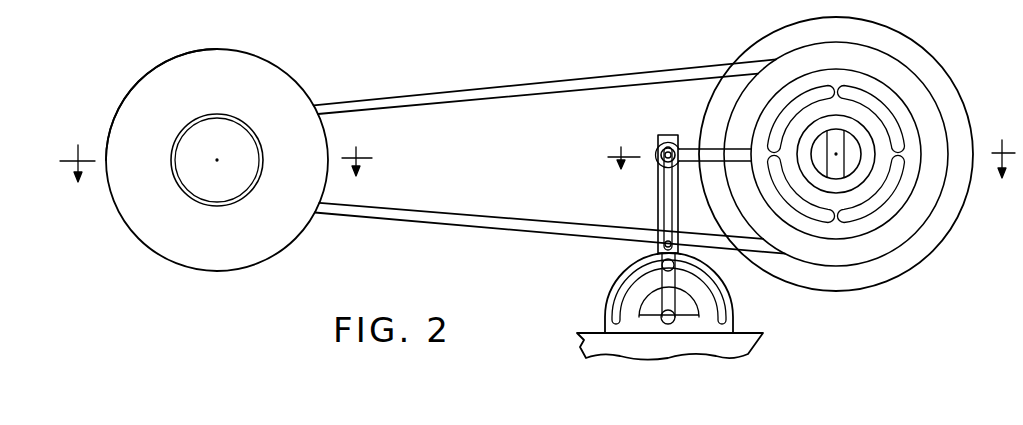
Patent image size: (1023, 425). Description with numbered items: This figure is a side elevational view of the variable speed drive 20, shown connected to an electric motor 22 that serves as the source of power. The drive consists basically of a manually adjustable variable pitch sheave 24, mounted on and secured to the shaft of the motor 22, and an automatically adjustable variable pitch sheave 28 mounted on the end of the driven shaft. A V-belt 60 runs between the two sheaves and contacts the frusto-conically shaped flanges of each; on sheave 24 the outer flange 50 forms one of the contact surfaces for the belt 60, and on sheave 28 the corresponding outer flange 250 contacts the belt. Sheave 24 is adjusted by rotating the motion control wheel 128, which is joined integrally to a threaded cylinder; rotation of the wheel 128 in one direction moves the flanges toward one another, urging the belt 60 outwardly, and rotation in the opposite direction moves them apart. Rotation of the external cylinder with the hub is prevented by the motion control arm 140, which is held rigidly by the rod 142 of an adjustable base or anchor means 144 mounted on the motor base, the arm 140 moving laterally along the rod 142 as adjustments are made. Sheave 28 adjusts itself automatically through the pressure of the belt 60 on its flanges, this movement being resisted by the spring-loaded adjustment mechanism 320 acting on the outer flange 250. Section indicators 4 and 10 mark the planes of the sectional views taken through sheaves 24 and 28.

The section line 4- 4 is at (811, 151).
The section line 10- 10 is at (216, 154).
The variable speed drive 20 is at (545, 148).
The electric motor 22 is at (930, 62).
The variable pitch sheave 24 is at (892, 55).
The variable pitch sheave 28 is at (297, 73).
The outer flange 50 is at (805, 56).
The V-belt 60 is at (558, 84).
The motion control wheel 128 is at (862, 232).
The motion control arm 140 is at (689, 119).
The rod 142 is at (661, 163).
The adjustable base 144 is at (604, 312).
The outer flange 250 is at (168, 67).
The adjustment mechanism 320 is at (207, 190).